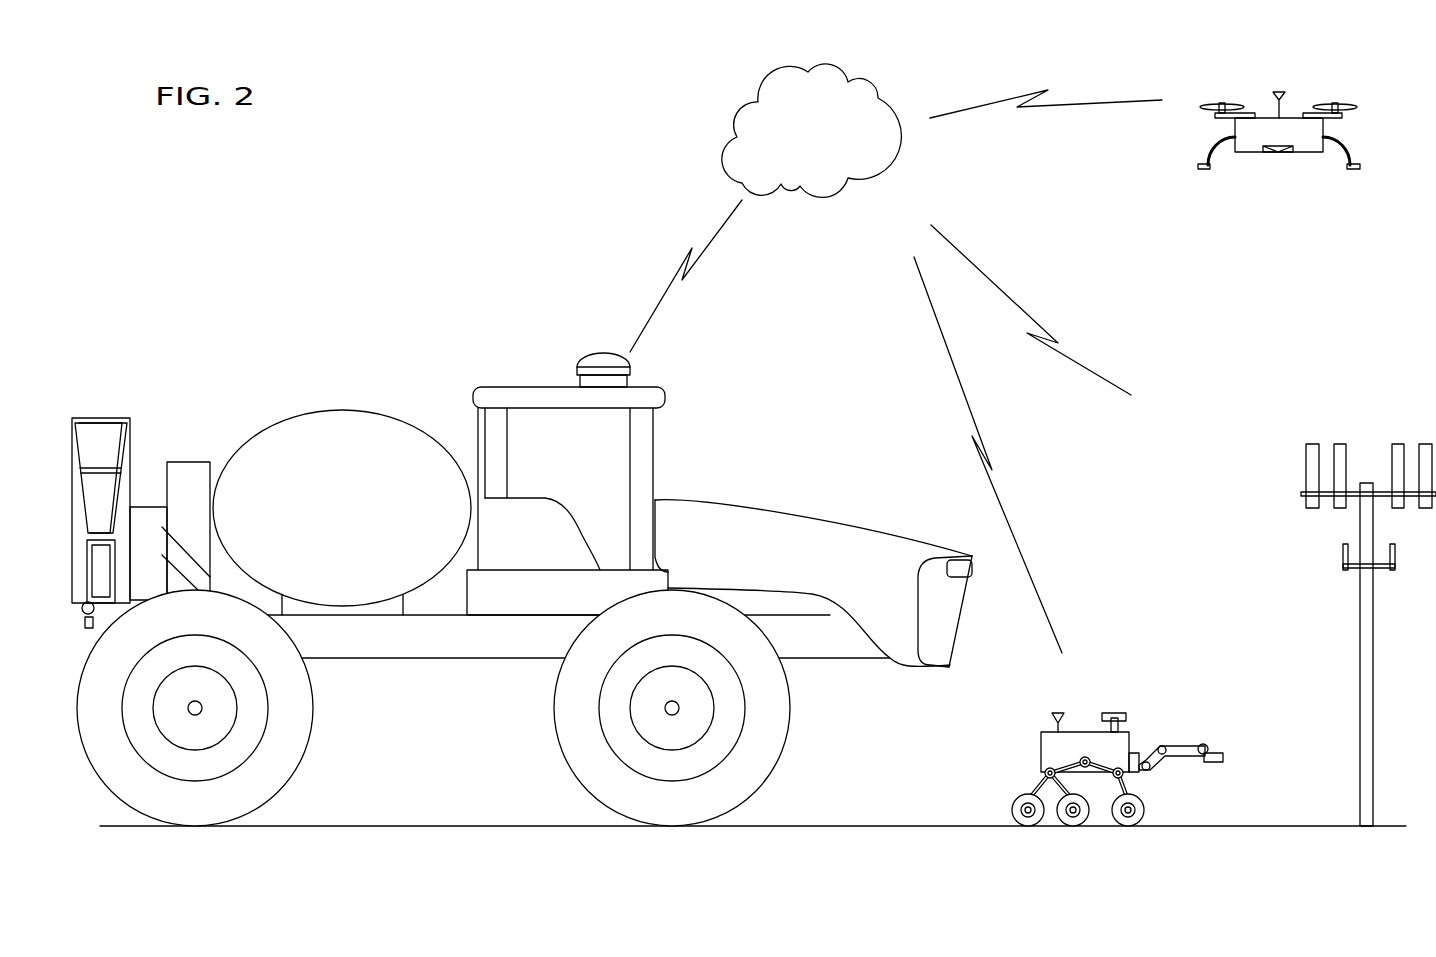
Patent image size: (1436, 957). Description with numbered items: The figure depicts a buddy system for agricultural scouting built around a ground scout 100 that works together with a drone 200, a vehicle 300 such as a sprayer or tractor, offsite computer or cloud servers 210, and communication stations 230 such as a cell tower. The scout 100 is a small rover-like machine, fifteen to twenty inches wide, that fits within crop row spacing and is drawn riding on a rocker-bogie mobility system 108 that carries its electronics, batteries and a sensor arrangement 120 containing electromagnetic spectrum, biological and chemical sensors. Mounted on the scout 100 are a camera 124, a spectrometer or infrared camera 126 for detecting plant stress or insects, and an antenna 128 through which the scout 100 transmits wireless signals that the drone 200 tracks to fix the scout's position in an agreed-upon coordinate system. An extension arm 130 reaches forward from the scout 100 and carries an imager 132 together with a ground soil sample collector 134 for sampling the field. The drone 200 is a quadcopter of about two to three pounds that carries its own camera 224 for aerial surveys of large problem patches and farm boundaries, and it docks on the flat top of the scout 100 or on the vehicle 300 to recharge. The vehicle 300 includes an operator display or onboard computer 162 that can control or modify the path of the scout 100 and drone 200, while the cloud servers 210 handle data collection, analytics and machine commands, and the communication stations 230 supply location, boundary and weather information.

The scout 100 is at (947, 736).
The Rocker-bogie mobility system 108 is at (1110, 772).
The sensing arrangement 120 is at (1041, 758).
The camera 124 is at (1124, 713).
The Spectrometer (e.g., Infrared Camera) 126 is at (1113, 713).
The Antenna 128 is at (1055, 720).
The Extension Arm 130 is at (1182, 757).
The Imager 132 is at (1227, 752).
The ground soil sample collector 134 is at (1300, 806).
The onboard computer 162 is at (578, 450).
The drone 200 is at (1070, 137).
The cloud servers 210 is at (745, 112).
The camera 224 is at (1275, 152).
The communication stations 230 is at (1337, 446).
The vehicle 300 is at (517, 523).